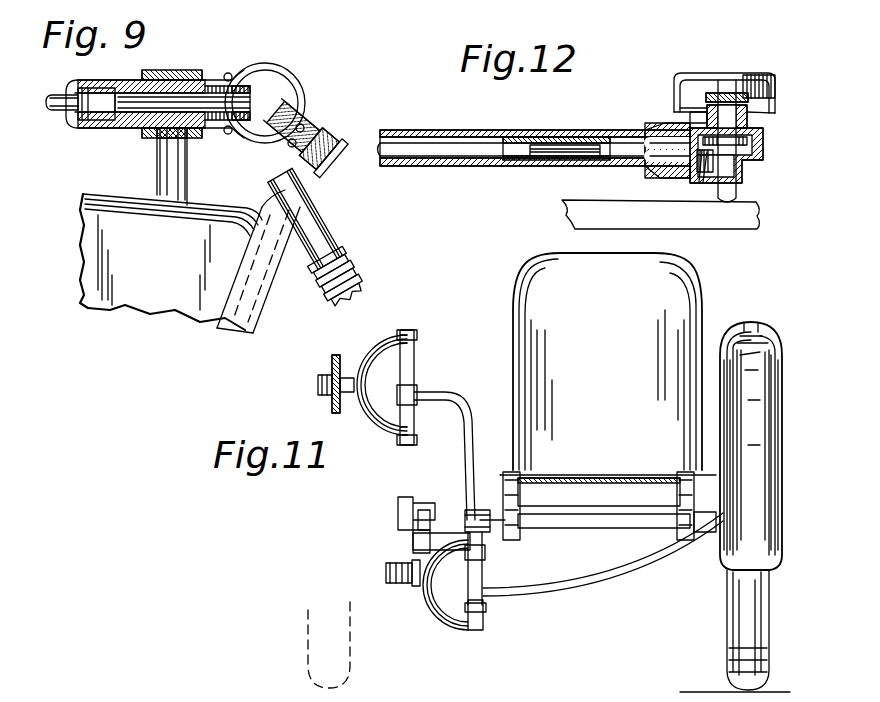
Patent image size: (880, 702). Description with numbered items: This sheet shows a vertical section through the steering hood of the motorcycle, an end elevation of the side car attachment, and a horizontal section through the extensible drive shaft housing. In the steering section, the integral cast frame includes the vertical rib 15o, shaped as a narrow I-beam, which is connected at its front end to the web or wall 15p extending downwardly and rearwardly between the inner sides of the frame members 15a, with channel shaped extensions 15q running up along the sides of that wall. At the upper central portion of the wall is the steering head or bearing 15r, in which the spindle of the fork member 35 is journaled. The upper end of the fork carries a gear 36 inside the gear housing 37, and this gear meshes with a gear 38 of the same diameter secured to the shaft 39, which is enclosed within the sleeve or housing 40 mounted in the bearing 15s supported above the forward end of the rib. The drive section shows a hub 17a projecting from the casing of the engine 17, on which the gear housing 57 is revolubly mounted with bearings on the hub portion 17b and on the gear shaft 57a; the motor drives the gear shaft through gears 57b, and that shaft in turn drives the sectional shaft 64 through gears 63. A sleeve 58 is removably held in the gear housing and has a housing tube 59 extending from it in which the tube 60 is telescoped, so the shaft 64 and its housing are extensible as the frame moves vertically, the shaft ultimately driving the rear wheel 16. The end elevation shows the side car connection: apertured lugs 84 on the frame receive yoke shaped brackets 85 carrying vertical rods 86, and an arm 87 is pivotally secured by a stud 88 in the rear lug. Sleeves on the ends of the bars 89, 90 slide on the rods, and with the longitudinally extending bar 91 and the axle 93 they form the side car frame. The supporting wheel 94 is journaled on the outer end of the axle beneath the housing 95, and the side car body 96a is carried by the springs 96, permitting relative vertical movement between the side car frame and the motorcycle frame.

In FIG. 12, the frame members 15a is at (570, 214).
In FIG. 9, the vertical rib 15o is at (116, 217).
In FIG. 9, the web or wall 15p is at (268, 298).
In FIG. 9, the channel shaped extensions 15q is at (232, 327).
In FIG. 9, the steering head or bearing 15r is at (320, 216).
In FIG. 9, the bearing 15s is at (170, 90).
In FIG. 11, the rear wheel 16 is at (305, 648).
In FIG. 12, the engine 17 is at (688, 76).
In FIG. 12, the hub 17a is at (704, 100).
In FIG. 12, the hub portion 17b is at (690, 118).
In FIG. 9, the fork member 35 is at (356, 290).
In FIG. 9, the gear 36 is at (292, 113).
In FIG. 9, the gear housing 37 is at (302, 93).
In FIG. 9, the gear 38 is at (262, 74).
In FIG. 9, the shaft 39 is at (176, 92).
In FIG. 9, the sleeve or housing 40 is at (98, 120).
In FIG. 12, the gear housing 57 is at (745, 165).
In FIG. 12, the gear shaft 57a is at (738, 184).
In FIG. 12, the gears 57b is at (746, 74).
In FIG. 12, the sleeve 58 is at (648, 178).
In FIG. 12, the housing tube 59 is at (522, 137).
In FIG. 12, the tube 60 is at (400, 138).
In FIG. 12, the gears 63 is at (706, 184).
In FIG. 12, the shaft 64 is at (538, 160).
In FIG. 11, the apertured lugs 84 is at (330, 397).
In FIG. 11, the brackets 85 is at (375, 428).
In FIG. 11, the vertical rods 86 is at (418, 377).
In FIG. 11, the arm 87 is at (413, 538).
In FIG. 11, the stud 88 is at (452, 490).
In FIG. 11, the bar 89 is at (470, 414).
In FIG. 11, the bar 90 is at (484, 563).
In FIG. 11, the longitudinally extending bar 91 is at (581, 584).
In FIG. 11, the axle 93 is at (600, 522).
In FIG. 11, the supporting wheel 94 is at (740, 610).
In FIG. 11, the housing 95 is at (736, 418).
In FIG. 11, the springs 96 is at (645, 498).
In FIG. 11, the side car body 96a is at (545, 326).